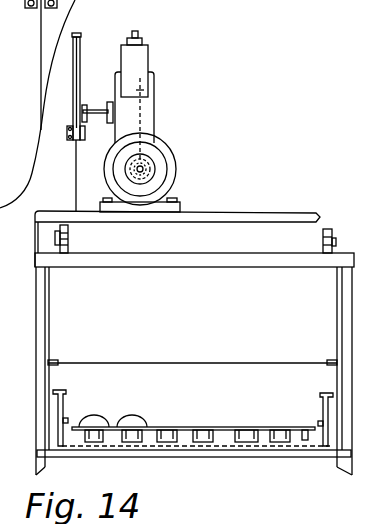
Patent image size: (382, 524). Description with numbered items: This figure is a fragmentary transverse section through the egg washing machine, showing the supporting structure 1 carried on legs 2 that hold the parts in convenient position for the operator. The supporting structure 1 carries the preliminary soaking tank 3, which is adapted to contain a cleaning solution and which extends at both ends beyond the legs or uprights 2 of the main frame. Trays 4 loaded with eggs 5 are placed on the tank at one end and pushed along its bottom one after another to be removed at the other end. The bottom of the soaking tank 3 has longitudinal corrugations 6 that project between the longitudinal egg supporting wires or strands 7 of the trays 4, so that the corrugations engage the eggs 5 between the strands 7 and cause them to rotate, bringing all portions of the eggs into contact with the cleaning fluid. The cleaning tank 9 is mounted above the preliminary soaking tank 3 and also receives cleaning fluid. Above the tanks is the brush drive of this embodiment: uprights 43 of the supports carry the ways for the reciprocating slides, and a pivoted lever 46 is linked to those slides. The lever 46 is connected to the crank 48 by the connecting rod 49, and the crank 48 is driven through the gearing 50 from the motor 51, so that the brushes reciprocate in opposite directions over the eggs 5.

The supporting structure 1 is at (35, 228).
The legs 2 is at (38, 443).
The preliminary soaking tank 3 is at (56, 410).
The trays 4 is at (248, 432).
The eggs 5 is at (131, 416).
The longitudinal corrugations 6 is at (163, 441).
The egg supporting wires or strands 7 is at (168, 448).
The cleaning tank 9 is at (55, 323).
The uprights 43 is at (60, 253).
The lever 46 is at (74, 166).
The crank 48 is at (82, 72).
The connecting rod 49 is at (82, 44).
The gearing 50 is at (146, 150).
The motor 51 is at (171, 157).